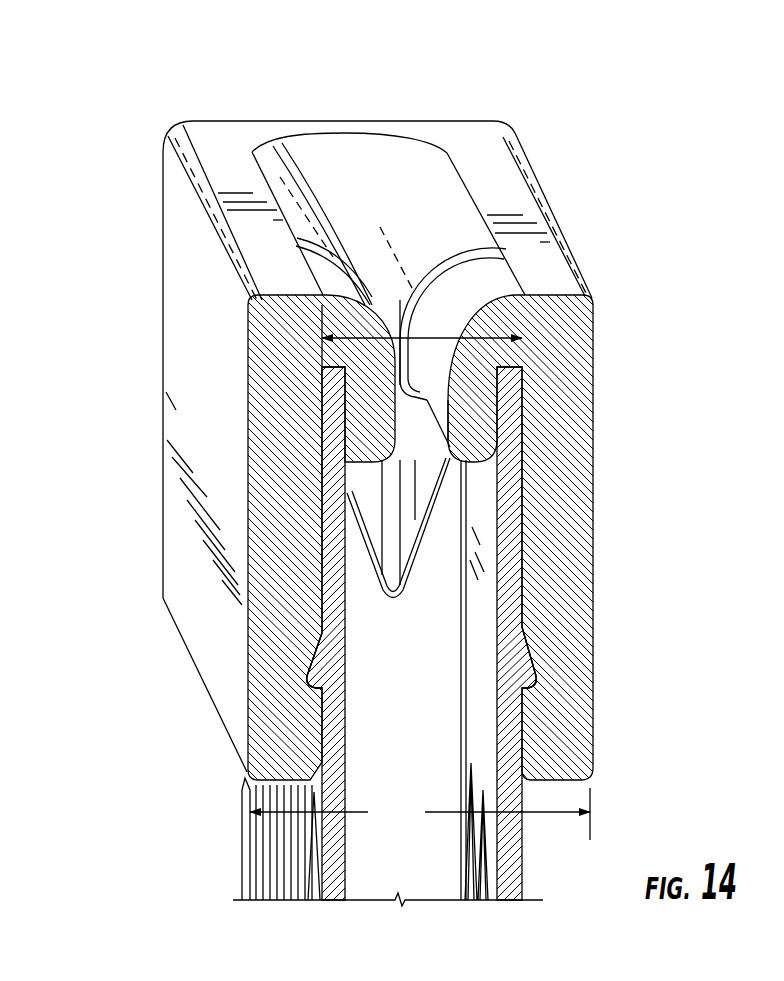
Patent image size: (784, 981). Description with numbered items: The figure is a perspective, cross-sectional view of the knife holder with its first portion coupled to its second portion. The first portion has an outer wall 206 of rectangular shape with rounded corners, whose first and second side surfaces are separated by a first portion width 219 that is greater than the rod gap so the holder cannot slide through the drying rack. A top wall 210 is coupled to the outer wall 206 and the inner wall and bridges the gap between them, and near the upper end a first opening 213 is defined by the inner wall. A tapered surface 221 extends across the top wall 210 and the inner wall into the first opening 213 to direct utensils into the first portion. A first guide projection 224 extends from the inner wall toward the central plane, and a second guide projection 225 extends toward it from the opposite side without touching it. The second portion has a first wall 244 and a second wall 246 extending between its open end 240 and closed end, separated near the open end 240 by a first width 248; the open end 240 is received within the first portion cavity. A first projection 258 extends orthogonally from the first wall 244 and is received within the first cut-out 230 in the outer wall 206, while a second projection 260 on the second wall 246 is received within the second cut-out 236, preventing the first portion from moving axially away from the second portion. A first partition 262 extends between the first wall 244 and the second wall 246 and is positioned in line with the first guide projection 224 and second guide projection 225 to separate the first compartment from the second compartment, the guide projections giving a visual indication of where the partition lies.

The outer wall 206 is at (270, 402).
The top wall 210 is at (232, 187).
The first opening 213 is at (363, 235).
The first portion width 219 is at (420, 589).
The tapered surface 221 is at (447, 183).
The first guide projection 224 is at (346, 262).
The second guide projection 225 is at (437, 270).
The first cut-out 230 is at (300, 662).
The second cut-out 236 is at (540, 640).
The open end 240 is at (524, 400).
The first wall 244 is at (317, 873).
The second wall 246 is at (518, 858).
The first width 248 is at (465, 312).
The first projection 258 is at (297, 683).
The second projection 260 is at (531, 673).
The first partition 262 is at (357, 633).